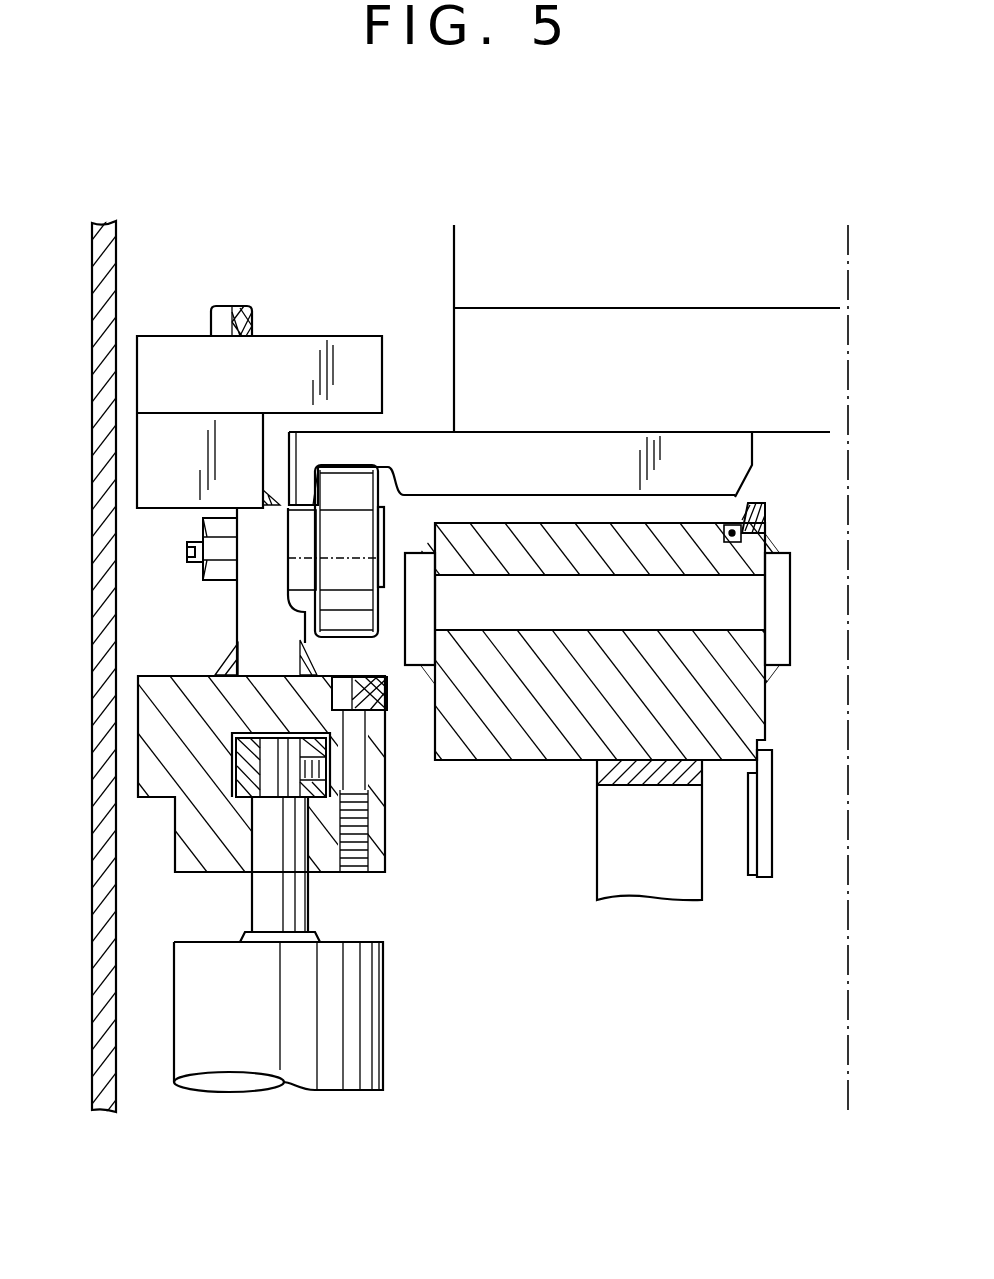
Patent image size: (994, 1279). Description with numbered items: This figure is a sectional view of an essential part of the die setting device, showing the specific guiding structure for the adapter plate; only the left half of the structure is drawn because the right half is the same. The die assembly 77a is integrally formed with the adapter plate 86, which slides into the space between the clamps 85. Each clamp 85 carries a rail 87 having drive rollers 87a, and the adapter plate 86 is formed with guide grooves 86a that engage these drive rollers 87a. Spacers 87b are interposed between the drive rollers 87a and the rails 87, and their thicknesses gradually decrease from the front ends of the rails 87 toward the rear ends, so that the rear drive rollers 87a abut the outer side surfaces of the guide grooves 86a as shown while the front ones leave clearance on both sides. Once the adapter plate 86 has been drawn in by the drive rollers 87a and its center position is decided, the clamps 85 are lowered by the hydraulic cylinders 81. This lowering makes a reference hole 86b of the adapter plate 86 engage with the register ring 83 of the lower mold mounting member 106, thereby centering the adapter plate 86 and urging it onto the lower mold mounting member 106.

The die assembly 77a is at (447, 280).
The clamp 85 is at (305, 330).
The adapter plate 86 is at (420, 438).
The guide groove 86a is at (404, 478).
The reference hole 86b is at (752, 483).
The register ring 83 is at (767, 518).
The rail 87 is at (148, 740).
The drive roller 87a is at (327, 610).
The spacer 87b is at (298, 566).
The lower mold mounting member 106 is at (503, 762).
The hydraulic cylinder 81 is at (383, 1018).